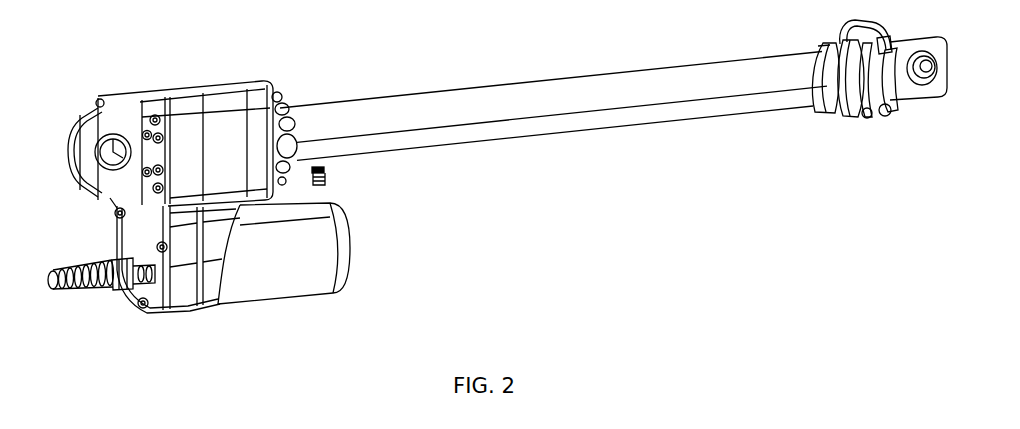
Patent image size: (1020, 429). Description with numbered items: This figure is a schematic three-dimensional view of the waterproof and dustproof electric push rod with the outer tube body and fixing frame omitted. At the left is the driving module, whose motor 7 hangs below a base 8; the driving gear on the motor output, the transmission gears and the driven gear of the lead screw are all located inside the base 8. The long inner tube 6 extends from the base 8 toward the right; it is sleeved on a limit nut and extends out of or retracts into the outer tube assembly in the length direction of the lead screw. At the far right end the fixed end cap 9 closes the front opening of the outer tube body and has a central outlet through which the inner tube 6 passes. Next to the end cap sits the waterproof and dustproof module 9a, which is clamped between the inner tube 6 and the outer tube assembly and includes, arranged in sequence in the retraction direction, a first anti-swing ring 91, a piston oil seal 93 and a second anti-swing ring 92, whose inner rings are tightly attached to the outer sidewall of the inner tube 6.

The inner tube 6 is at (560, 120).
The motor 7 is at (285, 262).
The base 8 is at (172, 88).
The fixed end cap 9 is at (891, 110).
The waterproof and dustproof module 9a is at (820, 44).
The first anti-swing ring 91 is at (868, 87).
The second anti-swing ring 92 is at (832, 108).
The piston oil seal 93 is at (845, 110).